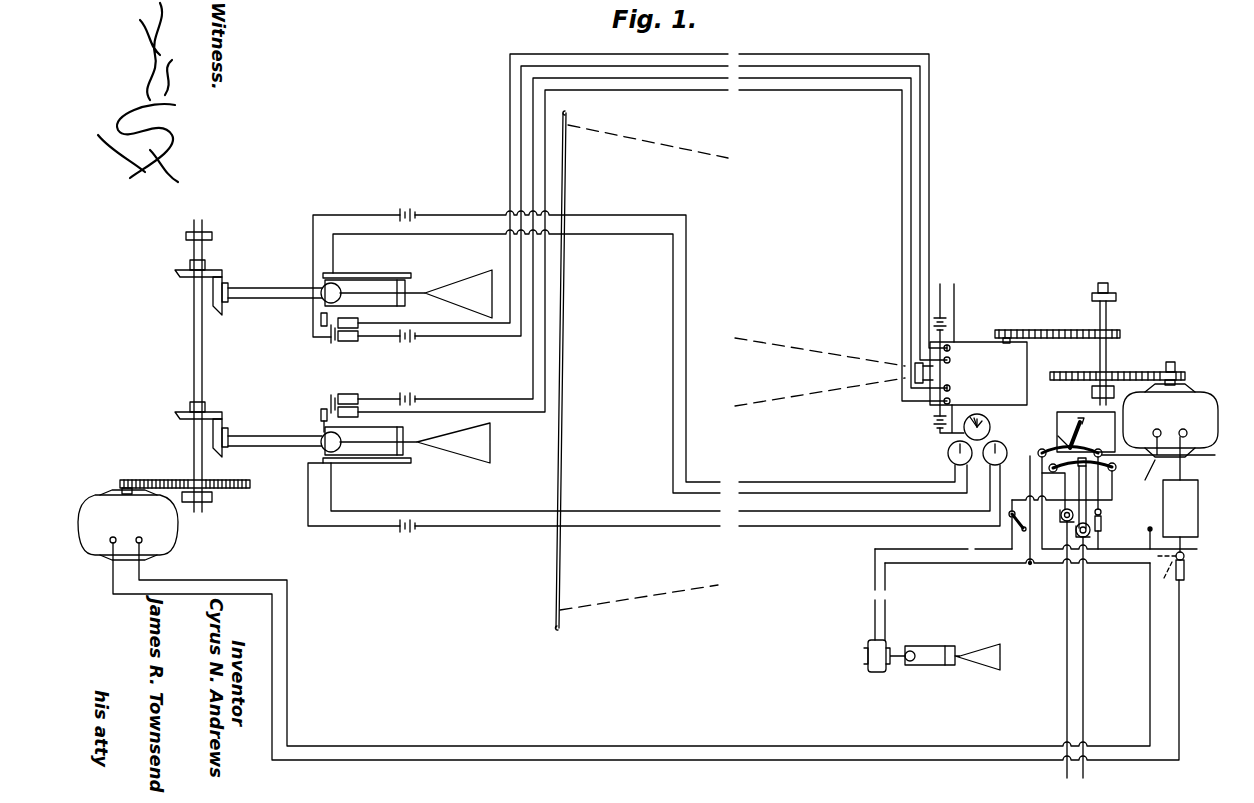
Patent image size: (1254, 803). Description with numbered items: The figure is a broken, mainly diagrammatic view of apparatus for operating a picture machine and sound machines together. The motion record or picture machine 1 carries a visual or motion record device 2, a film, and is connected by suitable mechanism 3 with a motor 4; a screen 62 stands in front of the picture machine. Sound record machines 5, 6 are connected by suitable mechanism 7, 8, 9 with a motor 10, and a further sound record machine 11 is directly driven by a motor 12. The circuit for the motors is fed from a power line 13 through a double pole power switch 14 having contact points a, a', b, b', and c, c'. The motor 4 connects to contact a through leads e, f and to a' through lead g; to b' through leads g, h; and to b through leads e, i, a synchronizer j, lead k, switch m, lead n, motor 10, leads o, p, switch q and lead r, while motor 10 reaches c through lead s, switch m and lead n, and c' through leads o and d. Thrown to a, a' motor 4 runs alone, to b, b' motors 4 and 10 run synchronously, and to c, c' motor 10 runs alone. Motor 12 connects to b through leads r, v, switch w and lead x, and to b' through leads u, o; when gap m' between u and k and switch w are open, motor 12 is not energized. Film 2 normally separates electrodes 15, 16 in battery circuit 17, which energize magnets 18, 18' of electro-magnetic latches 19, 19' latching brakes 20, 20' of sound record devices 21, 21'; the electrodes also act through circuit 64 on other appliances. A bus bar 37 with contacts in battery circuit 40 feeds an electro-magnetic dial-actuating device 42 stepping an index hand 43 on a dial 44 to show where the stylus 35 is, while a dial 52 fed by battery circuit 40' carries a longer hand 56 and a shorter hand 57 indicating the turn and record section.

The motion record- or picture-machine 1 is at (1026, 368).
The visual or motion record device 2 is at (945, 380).
The suitable mechanism 3 is at (1142, 355).
The motor 4 is at (1196, 412).
The sound record machine 5 is at (374, 267).
The sound record machine 6 is at (373, 470).
The suitable mechanism 7 is at (241, 309).
The suitable mechanism 8 is at (242, 428).
The suitable mechanism 9 is at (168, 471).
The motor 10 is at (160, 535).
The sound record machine 11 is at (924, 646).
The motor 12 is at (868, 657).
The power line 13 is at (1070, 673).
The double pole power switch 14 is at (1070, 419).
The electrode 15 is at (952, 348).
The electrode 16 is at (944, 358).
The battery circuit 17 is at (482, 337).
The magnets 18 is at (353, 393).
The magnets 18' is at (356, 340).
The electro-magnetic latch 19 is at (323, 391).
The electro-magnetic latch 19' is at (317, 343).
The brake 20 is at (312, 419).
The brake 20' is at (311, 317).
The sound record device 21 is at (371, 441).
The sound record device 21' is at (375, 293).
The stylus 35 is at (323, 288).
The bus bar 37 is at (388, 273).
The battery circuit 40 is at (654, 370).
The battery circuit 40' is at (922, 422).
The electro-magnetic dial-actuating device 42 is at (938, 461).
The index hand 43 is at (950, 454).
The dial 44 is at (951, 462).
The dial 52 is at (985, 419).
The longer hand 56 is at (990, 424).
The shorter hand 57 is at (990, 432).
The screen 62 is at (567, 300).
The circuit 64 is at (957, 302).
The contact point a is at (1123, 476).
The contact point a' is at (1102, 438).
The contact point b is at (1077, 488).
The contact point b' is at (1054, 435).
The contact point c is at (1043, 467).
The contact point c' is at (1034, 446).
The lead d is at (1028, 490).
The lead e is at (1165, 451).
The lead f is at (1148, 479).
The lead g is at (1137, 452).
The lead h is at (1085, 412).
The lead i is at (1181, 472).
The synchronizer j is at (1198, 498).
The lead k is at (1197, 549).
The switch m is at (1206, 568).
The gap m' is at (1167, 579).
The lead n is at (465, 760).
The lead o is at (288, 640).
The lead p is at (1092, 539).
The switch q is at (1102, 517).
The lead r is at (1104, 494).
The lead s is at (1147, 532).
The lead u is at (1017, 573).
The lead v is at (1058, 506).
The switch w is at (1010, 530).
The lead x is at (932, 549).